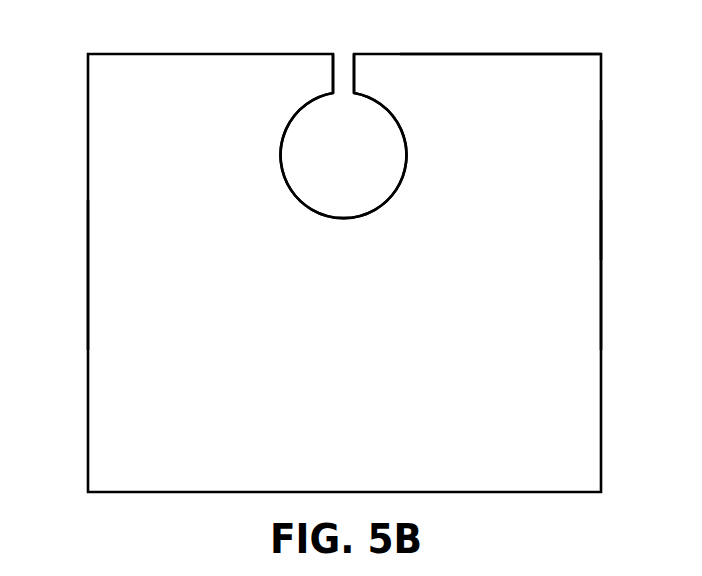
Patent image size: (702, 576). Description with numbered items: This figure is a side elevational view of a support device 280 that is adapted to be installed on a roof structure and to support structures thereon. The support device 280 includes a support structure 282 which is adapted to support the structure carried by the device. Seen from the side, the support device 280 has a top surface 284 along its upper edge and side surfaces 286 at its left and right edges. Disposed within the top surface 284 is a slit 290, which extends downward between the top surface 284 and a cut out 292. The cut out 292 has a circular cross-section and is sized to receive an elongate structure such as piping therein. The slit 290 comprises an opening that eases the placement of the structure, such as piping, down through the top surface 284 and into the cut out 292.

The support device 280 is at (587, 133).
The support structure 282 is at (575, 173).
The top surface 284 is at (512, 52).
The side surfaces 286 is at (88, 272).
The slit 290 is at (345, 63).
The cut out 292 is at (287, 183).